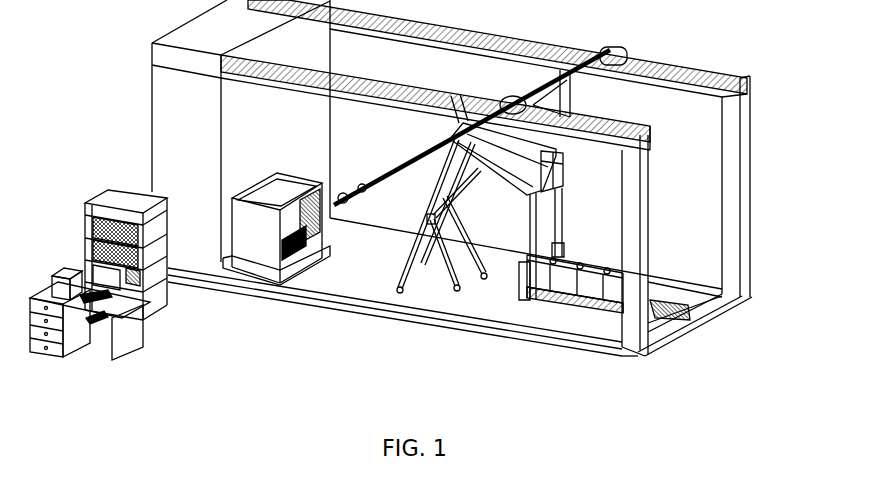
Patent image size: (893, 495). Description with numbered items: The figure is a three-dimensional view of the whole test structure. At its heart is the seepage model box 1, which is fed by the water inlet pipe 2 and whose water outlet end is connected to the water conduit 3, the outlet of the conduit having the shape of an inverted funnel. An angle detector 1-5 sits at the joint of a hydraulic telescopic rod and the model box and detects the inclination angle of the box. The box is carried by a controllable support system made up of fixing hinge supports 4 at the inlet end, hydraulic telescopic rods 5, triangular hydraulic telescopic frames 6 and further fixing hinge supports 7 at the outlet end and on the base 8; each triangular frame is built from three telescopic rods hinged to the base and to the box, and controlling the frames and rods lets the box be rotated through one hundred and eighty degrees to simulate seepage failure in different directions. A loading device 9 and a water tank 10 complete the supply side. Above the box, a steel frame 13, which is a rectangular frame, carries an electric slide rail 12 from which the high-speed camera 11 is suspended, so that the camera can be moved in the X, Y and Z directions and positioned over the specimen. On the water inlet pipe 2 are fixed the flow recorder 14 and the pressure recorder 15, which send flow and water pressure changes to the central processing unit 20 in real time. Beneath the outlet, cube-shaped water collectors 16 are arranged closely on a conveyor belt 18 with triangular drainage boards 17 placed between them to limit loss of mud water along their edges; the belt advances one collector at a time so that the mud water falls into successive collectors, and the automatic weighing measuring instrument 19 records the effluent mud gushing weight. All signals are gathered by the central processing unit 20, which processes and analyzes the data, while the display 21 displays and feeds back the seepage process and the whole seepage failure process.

The seepage model box 1 is at (500, 180).
The angle detector 1-5 is at (565, 168).
The water inlet pipe 2 is at (401, 165).
The water conduit 3 is at (567, 222).
The fixing hinge support 4 is at (430, 220).
The hydraulic telescopic rod 5 is at (492, 268).
The triangular hydraulic telescopic frame 6 is at (427, 217).
The fixing hinge support 7 is at (531, 300).
The base 8 is at (672, 280).
The loading device 9 is at (260, 245).
The water tank 10 is at (173, 110).
The high-speed camera 11 is at (572, 107).
The electric slide rail 12 is at (693, 64).
The steel frame 13 is at (750, 137).
The flow recorder 14 is at (445, 280).
The pressure recorder 15 is at (343, 192).
The water collector 16 is at (598, 312).
The triangular drainage board 17 is at (585, 262).
The conveyor belt 18 is at (573, 302).
The automatic weighing measuring instrument 19 is at (690, 316).
The central processing unit 20 is at (95, 195).
The display 21 is at (126, 290).